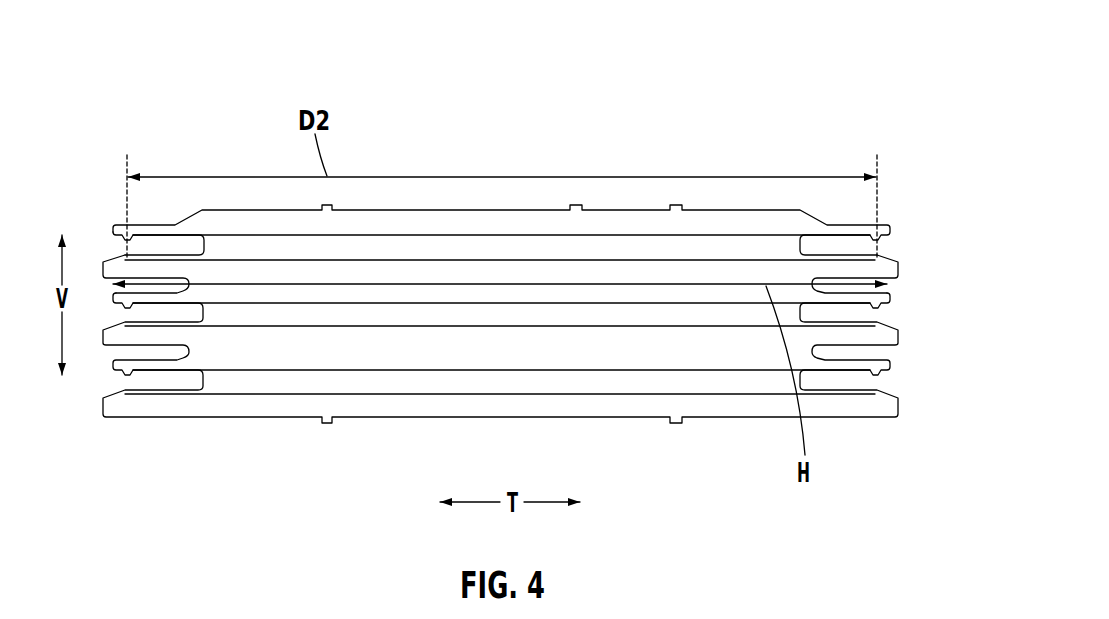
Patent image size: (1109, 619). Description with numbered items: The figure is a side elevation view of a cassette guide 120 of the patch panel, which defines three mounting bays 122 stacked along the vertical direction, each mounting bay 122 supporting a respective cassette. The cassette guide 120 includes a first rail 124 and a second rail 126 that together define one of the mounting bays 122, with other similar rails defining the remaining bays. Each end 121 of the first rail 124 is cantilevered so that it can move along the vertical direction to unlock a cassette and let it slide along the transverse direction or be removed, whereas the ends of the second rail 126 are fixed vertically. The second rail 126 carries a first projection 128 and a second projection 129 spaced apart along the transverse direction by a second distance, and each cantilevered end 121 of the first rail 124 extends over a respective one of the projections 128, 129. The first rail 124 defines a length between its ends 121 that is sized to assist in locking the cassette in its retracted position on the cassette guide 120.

The cassette guide 120 is at (866, 74).
The end of first rail 121 is at (114, 210).
The mounting bay 122 is at (382, 272).
The first rail 124 is at (698, 215).
The second rail 126 is at (651, 268).
The first projection 128 is at (123, 263).
The second projection 129 is at (886, 259).